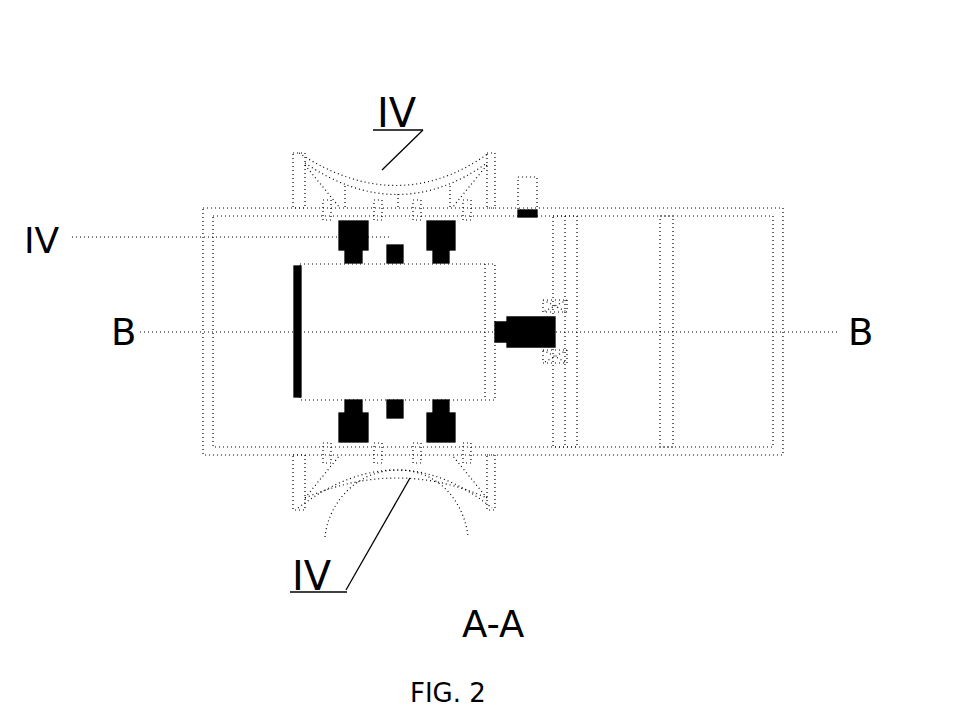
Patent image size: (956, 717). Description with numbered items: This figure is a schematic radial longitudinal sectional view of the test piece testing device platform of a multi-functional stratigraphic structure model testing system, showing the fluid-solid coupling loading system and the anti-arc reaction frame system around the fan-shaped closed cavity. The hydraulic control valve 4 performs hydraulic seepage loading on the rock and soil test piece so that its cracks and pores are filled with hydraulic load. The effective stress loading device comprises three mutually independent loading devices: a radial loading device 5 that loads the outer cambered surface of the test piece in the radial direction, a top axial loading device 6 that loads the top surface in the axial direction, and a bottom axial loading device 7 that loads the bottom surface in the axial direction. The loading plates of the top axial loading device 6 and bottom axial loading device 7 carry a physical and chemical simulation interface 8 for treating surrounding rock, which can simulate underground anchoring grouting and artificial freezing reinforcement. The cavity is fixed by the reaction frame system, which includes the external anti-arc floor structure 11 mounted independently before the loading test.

The hydraulic control valve 4 is at (530, 175).
The radial loading device 5 is at (523, 317).
The top axial loading device 6 is at (347, 188).
The bottom axial loading device 7 is at (325, 537).
The physical and chemical simulation interface 8 is at (339, 425).
The external anti-arc floor structure 11 is at (495, 347).